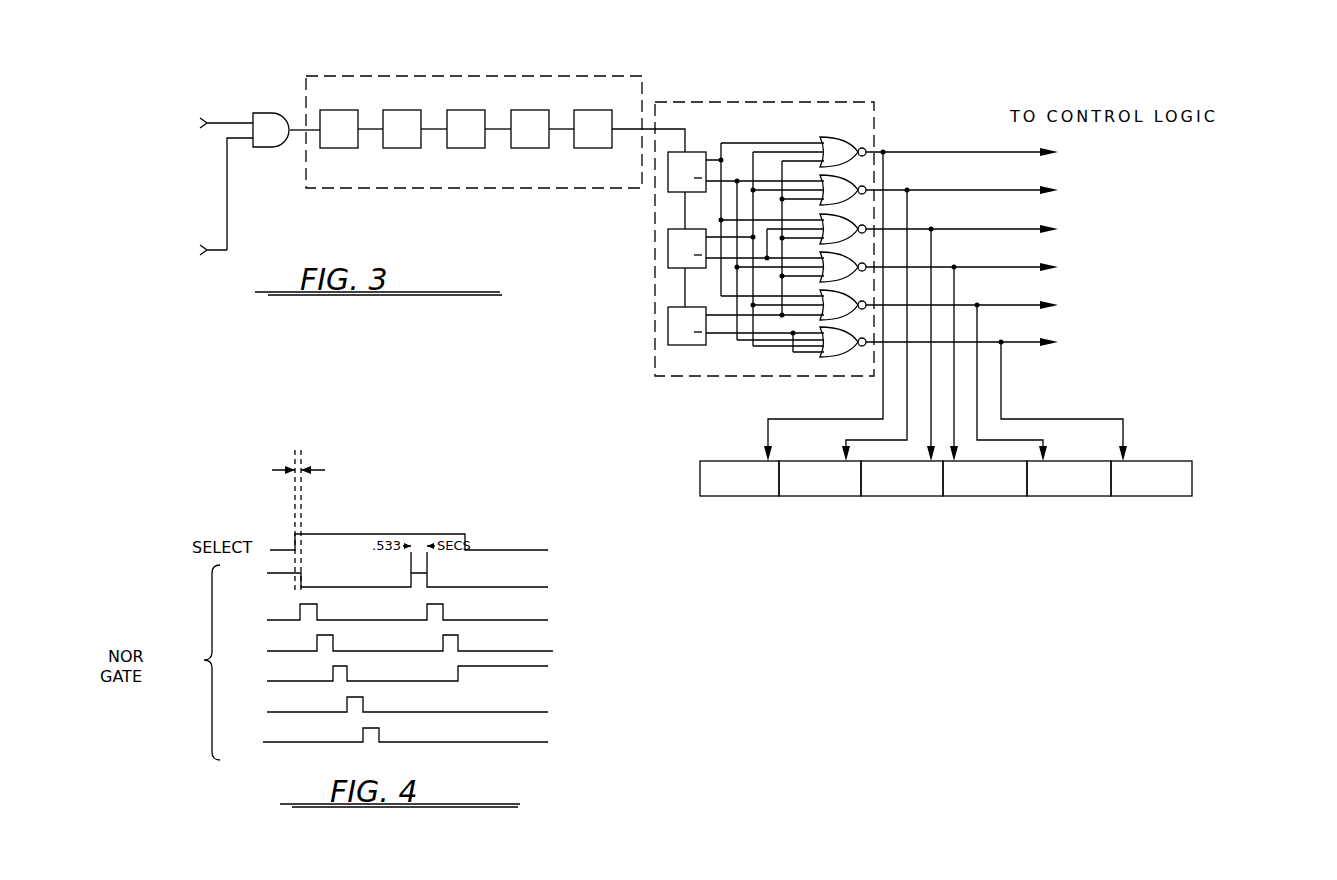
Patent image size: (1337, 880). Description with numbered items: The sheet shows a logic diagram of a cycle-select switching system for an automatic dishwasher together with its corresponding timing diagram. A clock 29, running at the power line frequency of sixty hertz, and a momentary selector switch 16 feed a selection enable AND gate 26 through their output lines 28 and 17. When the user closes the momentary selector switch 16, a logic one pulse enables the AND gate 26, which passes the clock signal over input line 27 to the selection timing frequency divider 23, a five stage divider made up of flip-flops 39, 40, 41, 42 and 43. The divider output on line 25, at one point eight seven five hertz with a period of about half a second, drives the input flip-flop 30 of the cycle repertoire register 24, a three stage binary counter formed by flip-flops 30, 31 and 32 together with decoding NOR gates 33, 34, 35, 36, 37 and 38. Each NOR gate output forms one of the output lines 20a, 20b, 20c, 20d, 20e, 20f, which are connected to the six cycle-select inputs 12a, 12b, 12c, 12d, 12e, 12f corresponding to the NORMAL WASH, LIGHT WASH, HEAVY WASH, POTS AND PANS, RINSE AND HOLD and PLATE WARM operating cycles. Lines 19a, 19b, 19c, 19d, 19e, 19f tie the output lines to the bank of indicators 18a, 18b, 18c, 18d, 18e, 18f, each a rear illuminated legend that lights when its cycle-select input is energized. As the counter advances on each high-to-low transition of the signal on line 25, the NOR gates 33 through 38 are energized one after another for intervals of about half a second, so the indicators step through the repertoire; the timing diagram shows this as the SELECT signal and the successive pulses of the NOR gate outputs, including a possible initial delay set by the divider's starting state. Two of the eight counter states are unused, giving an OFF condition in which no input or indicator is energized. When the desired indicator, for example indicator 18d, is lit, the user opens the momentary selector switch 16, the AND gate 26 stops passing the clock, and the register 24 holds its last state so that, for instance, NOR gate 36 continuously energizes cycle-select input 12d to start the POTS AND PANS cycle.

In FIG. 3, the cycle-select input 12a is at (1155, 152).
In FIG. 3, the cycle-select input 12b is at (1143, 190).
In FIG. 3, the cycle-select input 12c is at (1145, 229).
In FIG. 3, the cycle-select input 12d is at (1147, 267).
In FIG. 3, the cycle-select input 12e is at (1154, 305).
In FIG. 3, the cycle-select input 12f is at (1144, 342).
In FIG. 3, the momentary selector switch 16 is at (141, 229).
In FIG. 3, the output line 17 is at (228, 240).
In FIG. 3, the indicator 18a is at (740, 497).
In FIG. 3, the indicator 18b is at (828, 497).
In FIG. 3, the indicator 18c is at (893, 497).
In FIG. 3, the indicator 18d is at (980, 497).
In FIG. 3, the indicator 18e is at (1076, 497).
In FIG. 3, the indicator 18f is at (1170, 497).
In FIG. 3, the line 19a is at (885, 180).
In FIG. 3, the line 19b is at (909, 216).
In FIG. 3, the line 19c is at (933, 254).
In FIG. 3, the line 19d is at (956, 292).
In FIG. 3, the line 19e is at (979, 330).
In FIG. 3, the line 19f is at (1003, 408).
In FIG. 3, the output line 20a is at (952, 152).
In FIG. 3, the output line 20b is at (975, 190).
In FIG. 3, the output line 20c is at (980, 229).
In FIG. 3, the output line 20d is at (997, 267).
In FIG. 3, the output line 20e is at (1013, 305).
In FIG. 3, the output line 20f is at (1027, 344).
In FIG. 3, the selection timing frequency divider 23 is at (335, 76).
In FIG. 3, the cycle repertoire register 24 is at (768, 102).
In FIG. 3, the line 25 is at (650, 128).
In FIG. 3, the selection enable AND gate 26 is at (263, 112).
In FIG. 3, the input line 27 is at (297, 134).
In FIG. 3, the output line 28 is at (225, 123).
In FIG. 3, the clock 29 is at (183, 118).
In FIG. 3, the flip-flop 30 is at (667, 184).
In FIG. 3, the flip-flop 31 is at (667, 250).
In FIG. 3, the flip-flop 32 is at (667, 332).
In FIG. 3, the NOR gate 33 is at (840, 143).
In FIG. 4, the NOR gate 33 is at (388, 576).
In FIG. 3, the NOR gate 34 is at (848, 186).
In FIG. 4, the NOR gate 34 is at (388, 617).
In FIG. 3, the NOR gate 35 is at (830, 232).
In FIG. 4, the NOR gate 35 is at (390, 648).
In FIG. 3, the NOR gate 36 is at (830, 270).
In FIG. 4, the NOR gate 36 is at (388, 678).
In FIG. 3, the NOR gate 37 is at (830, 308).
In FIG. 4, the NOR gate 37 is at (388, 709).
In FIG. 3, the NOR gate 38 is at (830, 345).
In FIG. 4, the NOR gate 38 is at (388, 739).
In FIG. 3, the flip-flop 39 is at (340, 148).
In FIG. 3, the flip-flop 40 is at (403, 148).
In FIG. 3, the flip-flop 41 is at (467, 148).
In FIG. 3, the flip-flop 42 is at (531, 148).
In FIG. 3, the flip-flop 43 is at (594, 148).